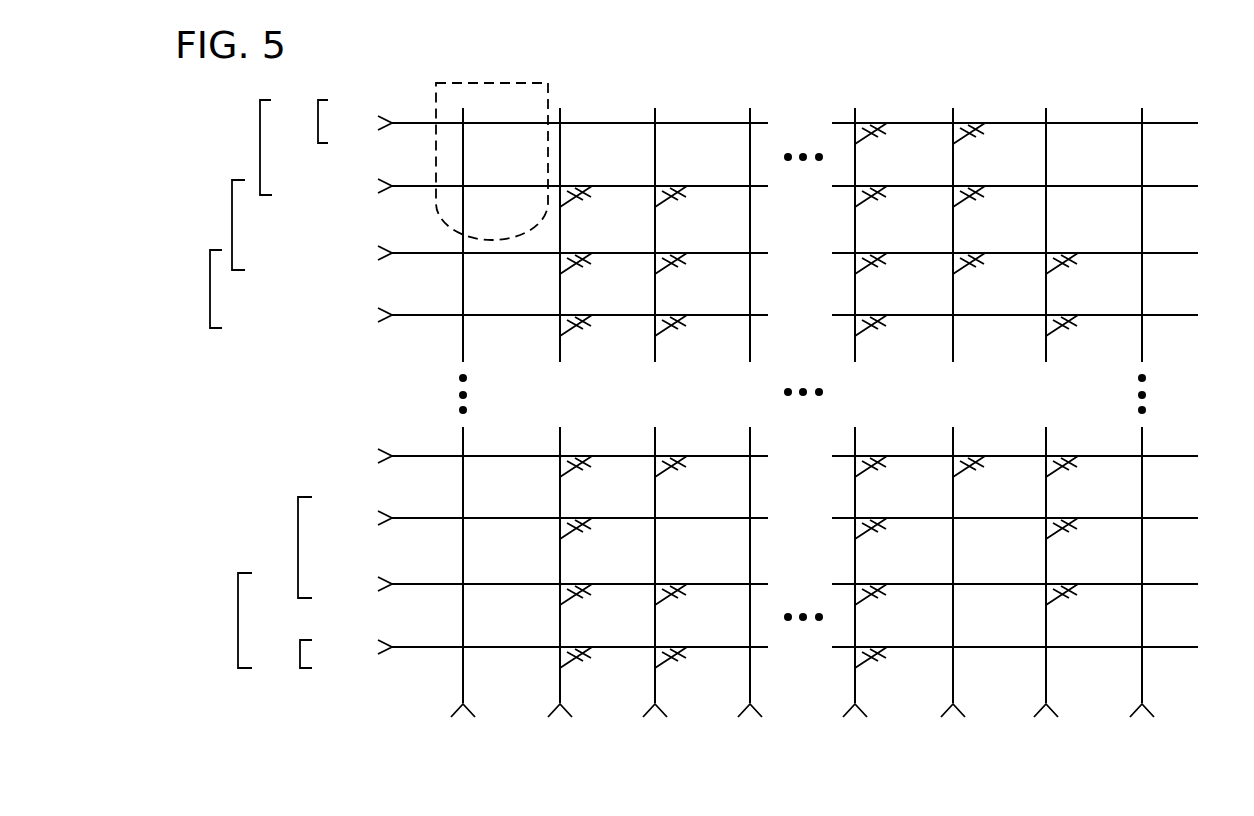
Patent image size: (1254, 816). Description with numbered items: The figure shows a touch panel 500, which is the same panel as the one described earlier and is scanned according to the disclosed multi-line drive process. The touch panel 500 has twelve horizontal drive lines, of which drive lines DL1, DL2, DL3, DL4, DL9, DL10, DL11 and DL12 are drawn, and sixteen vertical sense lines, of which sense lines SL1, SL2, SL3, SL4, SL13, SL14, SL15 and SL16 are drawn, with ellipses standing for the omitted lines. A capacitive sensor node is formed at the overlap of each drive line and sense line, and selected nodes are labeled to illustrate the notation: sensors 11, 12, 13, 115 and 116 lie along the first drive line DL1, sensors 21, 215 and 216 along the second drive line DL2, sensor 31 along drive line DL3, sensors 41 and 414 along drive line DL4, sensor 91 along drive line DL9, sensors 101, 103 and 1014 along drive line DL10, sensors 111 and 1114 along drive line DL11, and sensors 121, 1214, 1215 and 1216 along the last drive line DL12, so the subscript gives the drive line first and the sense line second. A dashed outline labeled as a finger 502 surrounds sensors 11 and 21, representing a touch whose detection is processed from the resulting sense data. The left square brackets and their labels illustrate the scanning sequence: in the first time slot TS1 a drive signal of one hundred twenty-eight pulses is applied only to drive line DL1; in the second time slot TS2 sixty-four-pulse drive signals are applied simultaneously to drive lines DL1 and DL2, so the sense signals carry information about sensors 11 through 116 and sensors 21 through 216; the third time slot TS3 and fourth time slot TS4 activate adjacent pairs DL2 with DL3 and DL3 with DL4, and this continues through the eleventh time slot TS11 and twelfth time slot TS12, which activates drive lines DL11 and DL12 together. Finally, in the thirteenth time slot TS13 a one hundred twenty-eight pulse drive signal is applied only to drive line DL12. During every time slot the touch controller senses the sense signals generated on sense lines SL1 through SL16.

The touch panel 500 is at (655, 65).
The finger 502 is at (481, 82).
The capacitive sensor C11 11 is at (495, 141).
The capacitive sensor C12 12 is at (592, 141).
The capacitive sensor C13 13 is at (686, 141).
The capacitive sensor C115 115 is at (1081, 141).
The capacitive sensor C116 116 is at (1177, 141).
The capacitive sensor C21 21 is at (495, 204).
The capacitive sensor C215 215 is at (1081, 204).
The capacitive sensor C216 216 is at (1177, 204).
The capacitive sensor C31 31 is at (495, 271).
The capacitive sensor C41 41 is at (495, 333).
The capacitive sensor C414 414 is at (989, 333).
The capacitive sensor C91 91 is at (495, 474).
The capacitive sensor C101 101 is at (499, 536).
The capacitive sensor C103 103 is at (690, 536).
The capacitive sensor C1014 1014 is at (992, 536).
The capacitive sensor C111 111 is at (499, 602).
The capacitive sensor C1114 1114 is at (992, 602).
The capacitive sensor C121 121 is at (499, 665).
The capacitive sensor C1214 1214 is at (992, 665).
The capacitive sensor C1215 1215 is at (1086, 665).
The capacitive sensor C1216 1216 is at (1182, 665).
The first drive line DL1 is at (766, 125).
The second drive line DL2 is at (766, 188).
The third drive line DL3 is at (766, 255).
The fourth drive line DL4 is at (766, 317).
The ninth drive line DL9 is at (766, 458).
The tenth drive line DL10 is at (760, 520).
The eleventh drive line DL11 is at (760, 586).
The twelfth drive line DL12 is at (760, 649).
The first sense line SL1 is at (464, 428).
The second sense line SL2 is at (561, 428).
The third sense line SL3 is at (656, 428).
The fourth sense line SL4 is at (751, 428).
The thirteenth sense line SL13 is at (857, 428).
The fourteenth sense line SL14 is at (955, 428).
The fifteenth sense line SL15 is at (1048, 428).
The sixteenth sense line SL16 is at (1144, 428).
The first time slot TS1 is at (300, 121).
The second time slot TS2 is at (247, 147).
The third time slot TS3 is at (217, 225).
The fourth time slot TS4 is at (194, 287).
The eleventh time slot TS11 is at (279, 547).
The twelfth time slot TS12 is at (218, 620).
The thirteenth time slot TS13 is at (280, 652).